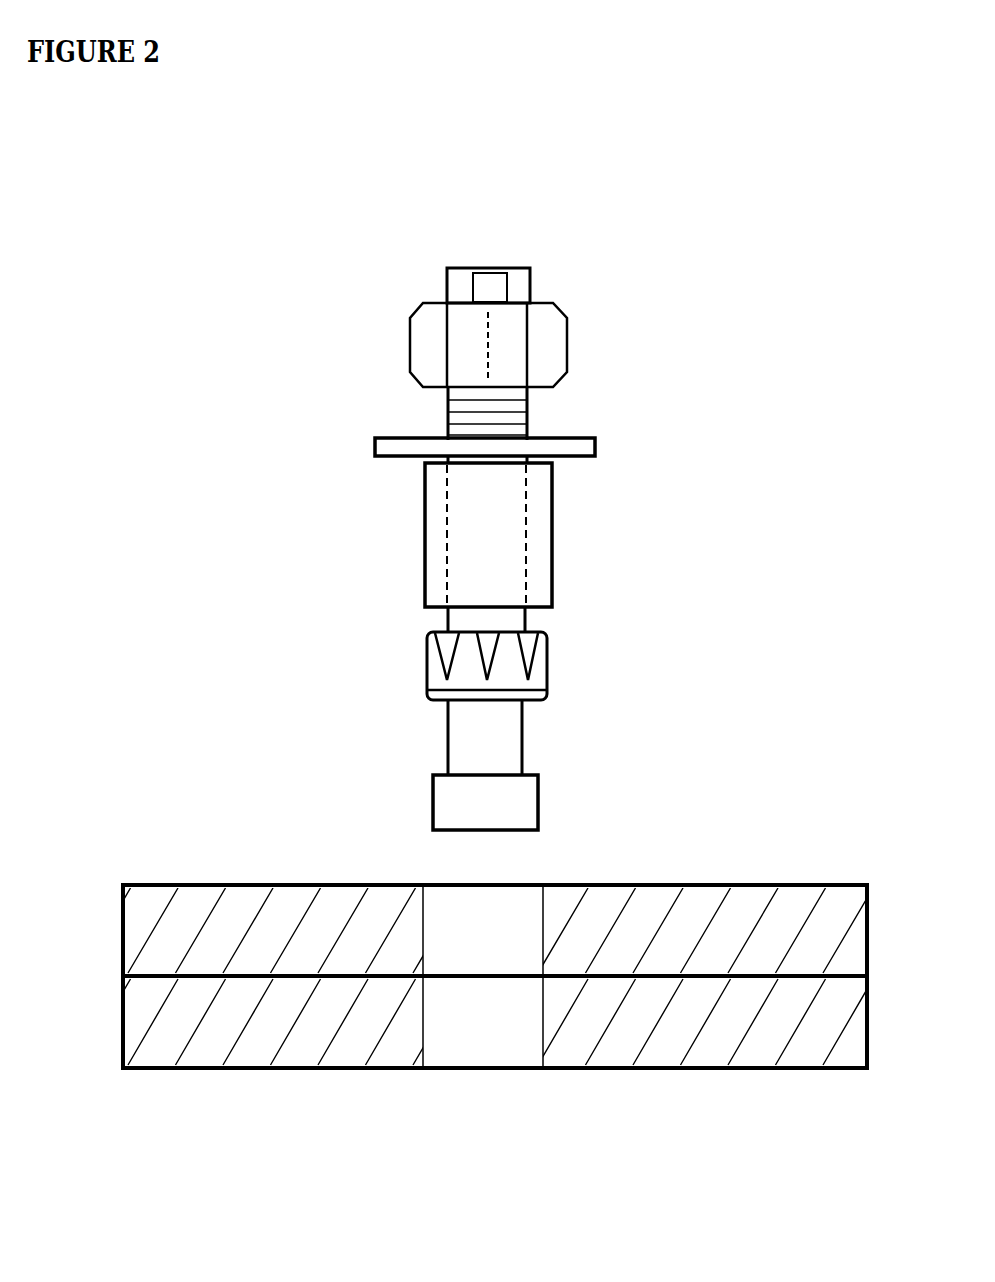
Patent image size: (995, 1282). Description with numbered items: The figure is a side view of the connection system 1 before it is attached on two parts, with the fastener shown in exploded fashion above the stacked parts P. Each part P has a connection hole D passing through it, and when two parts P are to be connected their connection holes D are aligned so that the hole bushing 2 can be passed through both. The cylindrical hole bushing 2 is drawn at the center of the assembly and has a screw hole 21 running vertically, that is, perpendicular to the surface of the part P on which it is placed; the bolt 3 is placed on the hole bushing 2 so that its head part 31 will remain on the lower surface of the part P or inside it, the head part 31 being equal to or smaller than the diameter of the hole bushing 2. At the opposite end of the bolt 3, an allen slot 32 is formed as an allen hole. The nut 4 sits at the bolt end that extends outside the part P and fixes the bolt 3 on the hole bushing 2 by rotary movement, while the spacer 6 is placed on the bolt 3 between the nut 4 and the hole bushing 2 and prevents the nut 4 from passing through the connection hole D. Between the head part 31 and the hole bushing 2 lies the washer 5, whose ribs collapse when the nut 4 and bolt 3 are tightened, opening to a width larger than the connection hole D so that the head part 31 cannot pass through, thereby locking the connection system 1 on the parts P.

The connection system 1 is at (191, 324).
The hole bushing 2 is at (432, 537).
The screw hole 21 is at (436, 572).
The bolt 3 is at (507, 420).
The head part 31 is at (513, 807).
The allen slot 32 is at (507, 283).
The nut 4 is at (538, 349).
The washer 5 is at (503, 670).
The spacer 6 is at (557, 447).
The part P is at (185, 917).
The connection hole D is at (485, 1040).